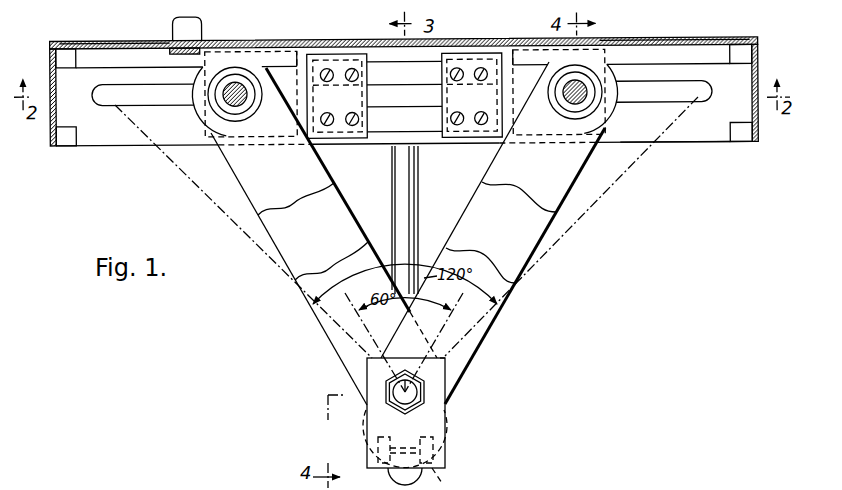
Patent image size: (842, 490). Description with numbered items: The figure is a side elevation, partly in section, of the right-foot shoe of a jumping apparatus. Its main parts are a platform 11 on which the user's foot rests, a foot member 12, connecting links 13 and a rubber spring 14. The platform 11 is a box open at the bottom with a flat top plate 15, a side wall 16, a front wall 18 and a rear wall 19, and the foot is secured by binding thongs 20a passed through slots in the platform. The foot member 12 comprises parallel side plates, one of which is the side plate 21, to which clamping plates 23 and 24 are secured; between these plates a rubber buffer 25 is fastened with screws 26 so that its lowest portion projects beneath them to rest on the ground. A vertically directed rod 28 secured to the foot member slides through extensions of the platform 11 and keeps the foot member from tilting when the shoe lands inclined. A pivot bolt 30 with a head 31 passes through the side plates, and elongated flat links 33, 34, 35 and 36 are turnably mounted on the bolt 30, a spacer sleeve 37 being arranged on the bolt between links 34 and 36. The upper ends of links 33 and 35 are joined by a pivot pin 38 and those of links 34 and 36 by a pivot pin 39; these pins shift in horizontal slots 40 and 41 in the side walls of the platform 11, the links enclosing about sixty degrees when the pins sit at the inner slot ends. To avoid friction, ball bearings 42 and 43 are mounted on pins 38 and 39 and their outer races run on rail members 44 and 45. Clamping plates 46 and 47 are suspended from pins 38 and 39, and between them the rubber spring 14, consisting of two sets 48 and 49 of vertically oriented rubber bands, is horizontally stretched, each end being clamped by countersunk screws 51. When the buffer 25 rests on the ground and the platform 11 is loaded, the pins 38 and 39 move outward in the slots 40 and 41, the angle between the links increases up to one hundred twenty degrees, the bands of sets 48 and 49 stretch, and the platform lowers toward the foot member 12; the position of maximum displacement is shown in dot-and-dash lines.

The platform 11 is at (470, 43).
The foot member 12 is at (447, 452).
The connecting links 13 is at (272, 247).
The rubber spring 14 is at (378, 56).
The top plate 15 is at (697, 46).
The side wall 16 is at (712, 132).
The front wall 18 is at (50, 128).
The rear wall 19 is at (757, 72).
The binding thong 20a is at (200, 33).
The side plate 21 is at (445, 357).
The clamping plate 23 is at (373, 437).
The clamping plate 24 is at (437, 436).
The rubber buffer 25 is at (397, 472).
The screws 26 is at (448, 479).
The rod 28 is at (419, 165).
The pivot bolt 30 is at (412, 398).
The head 31 is at (388, 407).
The link 33 is at (568, 192).
The link 34 is at (349, 213).
The link 35 is at (458, 223).
The link 36 is at (243, 178).
The spacer sleeve 37 is at (423, 397).
The pivot pin 38 is at (565, 103).
The pivot pin 39 is at (223, 104).
The slots 40 is at (676, 108).
The slots 41 is at (115, 106).
The ball bearing 42 is at (590, 112).
The ball bearing 43 is at (230, 118).
The rail member 44 is at (636, 56).
The rail member 45 is at (161, 52).
The clamping plate 46 is at (508, 62).
The clamping plate 47 is at (305, 60).
The set of rubber bands 48 is at (357, 84).
The set of rubber bands 49 is at (357, 130).
The countersunk screws 51 is at (352, 115).